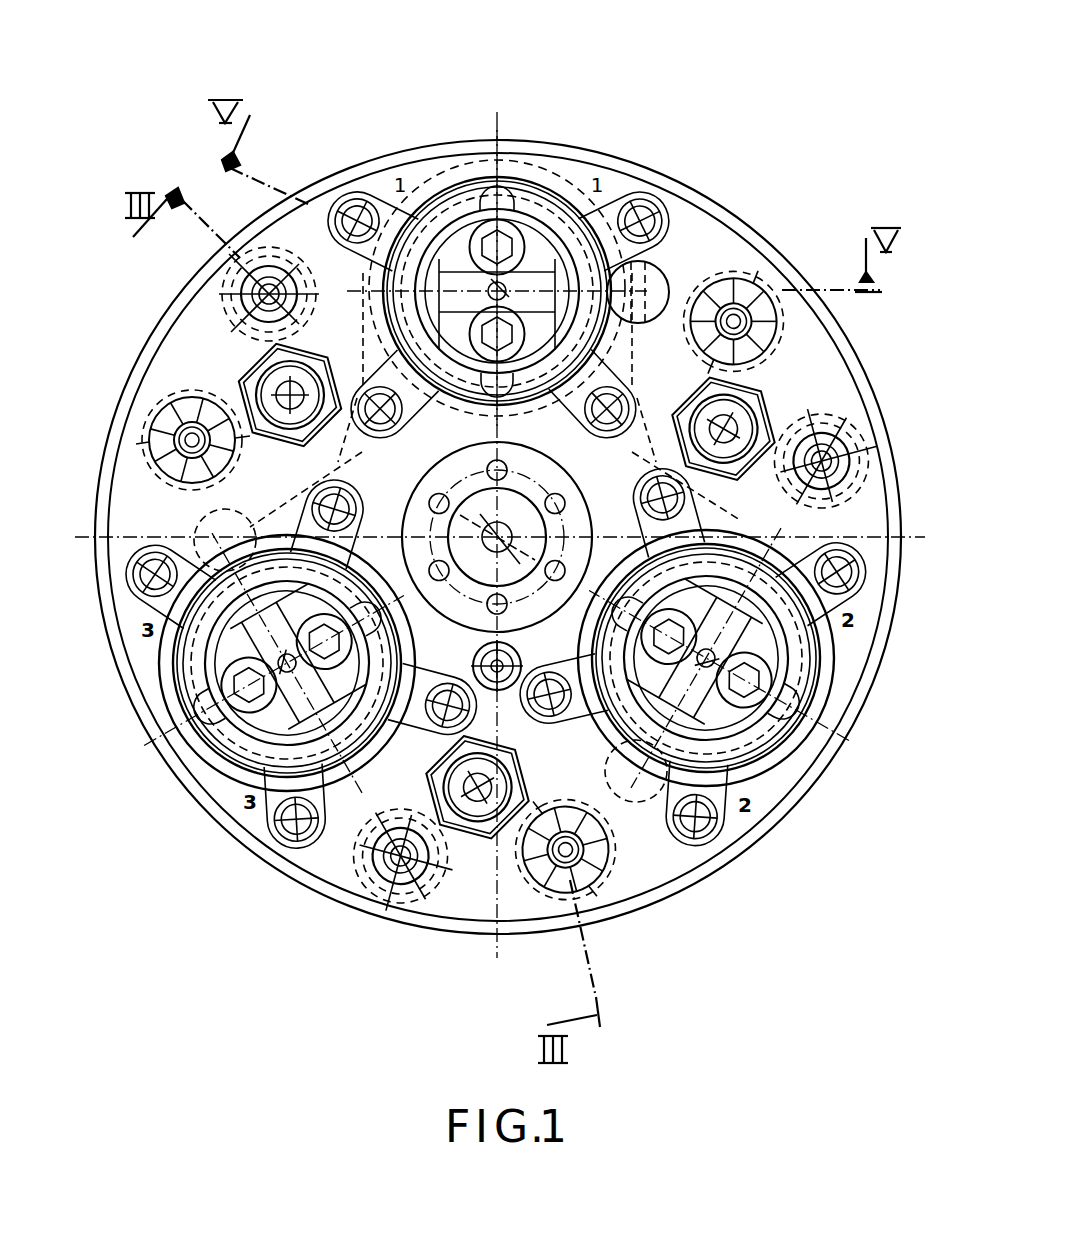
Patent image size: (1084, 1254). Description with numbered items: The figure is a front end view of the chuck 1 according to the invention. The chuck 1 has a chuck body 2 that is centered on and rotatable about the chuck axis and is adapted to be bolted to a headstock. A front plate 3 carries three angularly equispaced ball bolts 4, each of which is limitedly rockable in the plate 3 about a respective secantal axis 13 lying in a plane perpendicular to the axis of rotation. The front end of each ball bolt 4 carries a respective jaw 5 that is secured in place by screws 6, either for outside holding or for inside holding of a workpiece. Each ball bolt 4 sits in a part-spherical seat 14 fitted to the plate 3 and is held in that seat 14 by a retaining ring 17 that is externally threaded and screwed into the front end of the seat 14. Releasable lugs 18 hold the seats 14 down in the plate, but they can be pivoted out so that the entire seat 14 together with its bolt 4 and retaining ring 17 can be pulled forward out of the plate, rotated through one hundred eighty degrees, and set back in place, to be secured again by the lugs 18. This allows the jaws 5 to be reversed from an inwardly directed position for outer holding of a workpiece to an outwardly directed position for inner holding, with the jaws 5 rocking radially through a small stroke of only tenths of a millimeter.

The chuck 1 is at (540, 100).
The chuck body 2 is at (688, 272).
The front plate 3 is at (683, 220).
The ball bolt 4 is at (455, 210).
The jaw 5 is at (740, 800).
The screw 6 is at (622, 532).
The secantal axis 13 is at (700, 295).
The part-spherical seat 14 is at (825, 690).
The retaining ring 17 is at (455, 247).
The releasable lug 18 is at (610, 207).